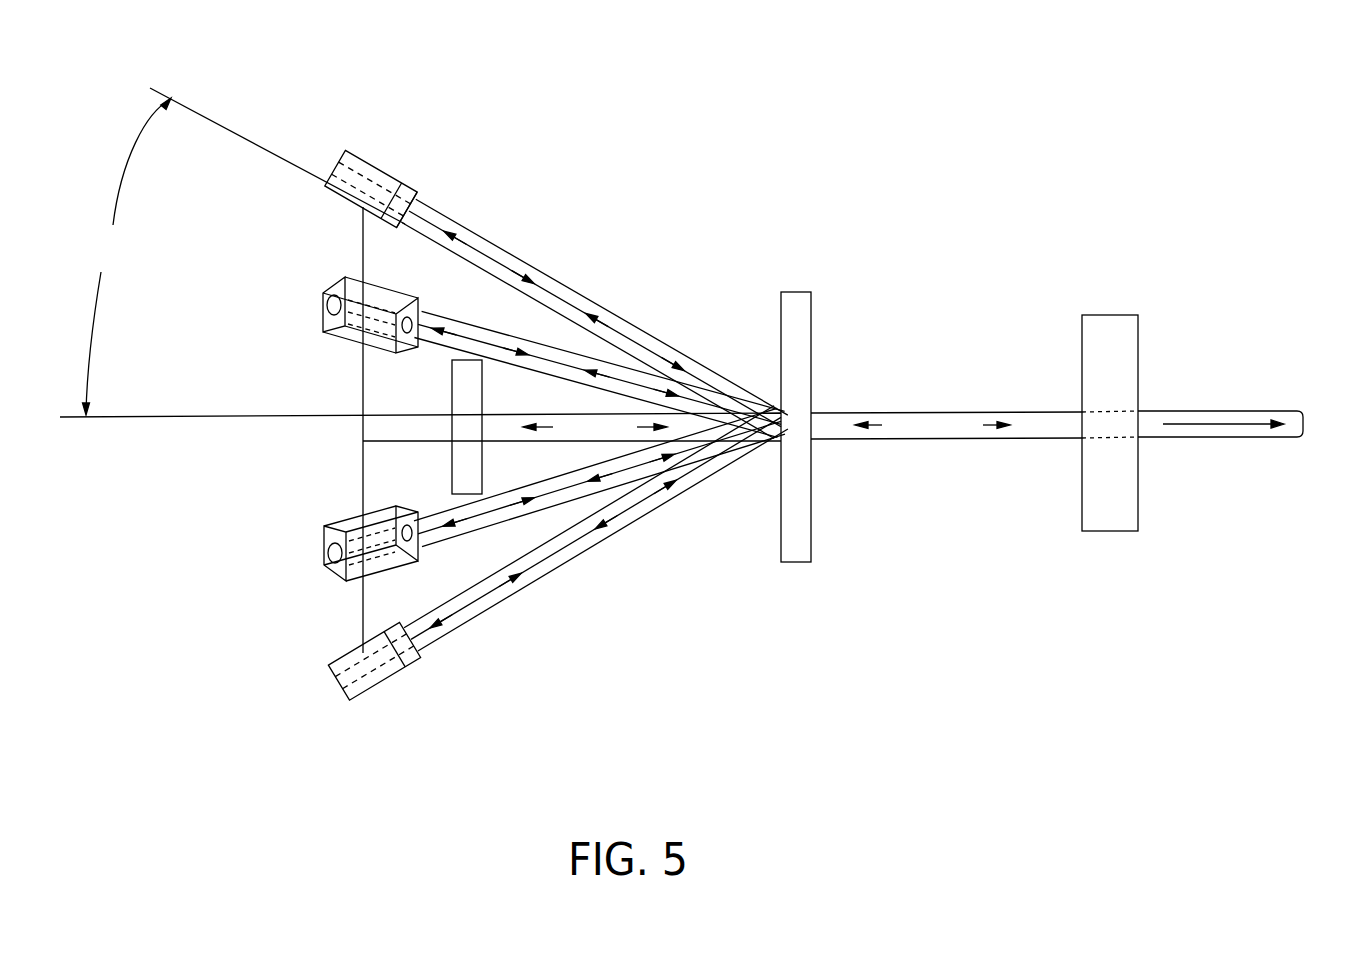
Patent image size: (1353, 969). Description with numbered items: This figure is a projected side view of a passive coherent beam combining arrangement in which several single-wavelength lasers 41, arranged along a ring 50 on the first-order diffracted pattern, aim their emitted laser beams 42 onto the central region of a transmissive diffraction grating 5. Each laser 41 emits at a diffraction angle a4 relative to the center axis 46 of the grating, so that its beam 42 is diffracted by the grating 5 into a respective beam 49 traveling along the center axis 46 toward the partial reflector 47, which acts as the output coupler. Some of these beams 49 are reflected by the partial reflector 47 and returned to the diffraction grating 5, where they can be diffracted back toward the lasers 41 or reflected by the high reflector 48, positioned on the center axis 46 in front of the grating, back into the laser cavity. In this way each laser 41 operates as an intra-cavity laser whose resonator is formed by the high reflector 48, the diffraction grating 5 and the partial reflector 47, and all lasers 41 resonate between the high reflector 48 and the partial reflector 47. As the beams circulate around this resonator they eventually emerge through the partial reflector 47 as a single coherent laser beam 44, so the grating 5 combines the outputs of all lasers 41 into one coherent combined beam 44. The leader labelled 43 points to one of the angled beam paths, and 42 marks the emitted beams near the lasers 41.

The laser 41 is at (338, 172).
The laser beam 42 is at (428, 224).
The laser beam 43 is at (527, 278).
The transmissive diffraction grating 5 is at (798, 322).
The refracted beam 49 is at (910, 415).
The partial reflector 47 is at (1110, 345).
The laser beam 44 is at (1198, 413).
The center axis 46 is at (1265, 421).
The high reflector 48 is at (470, 467).
The ring 50 is at (360, 617).
The diffraction angle a4 is at (244, 251).